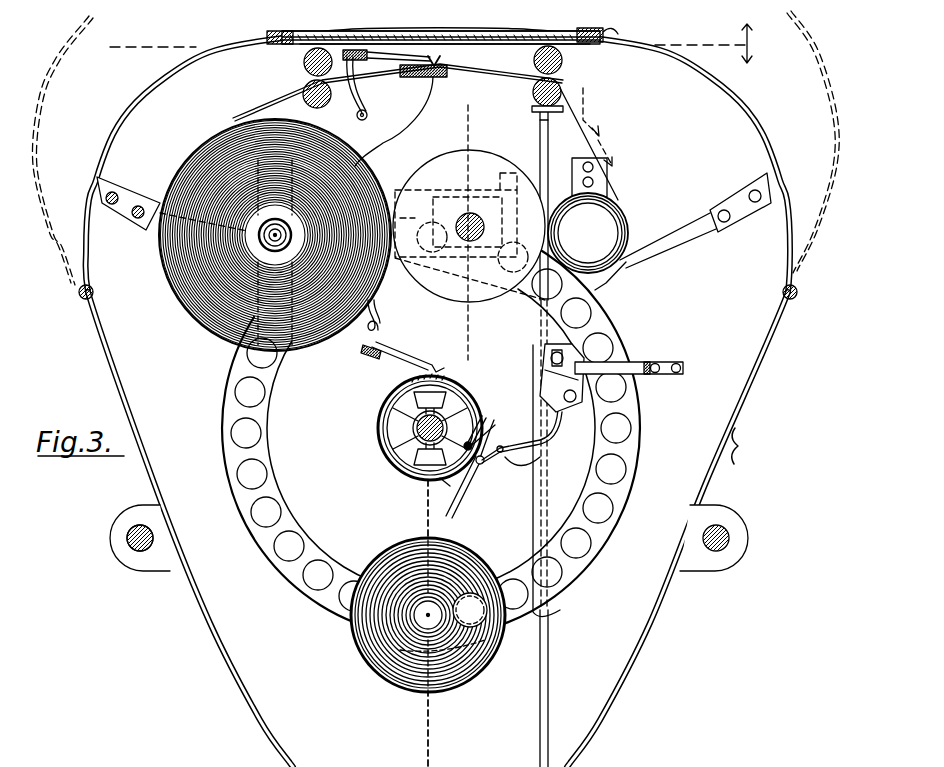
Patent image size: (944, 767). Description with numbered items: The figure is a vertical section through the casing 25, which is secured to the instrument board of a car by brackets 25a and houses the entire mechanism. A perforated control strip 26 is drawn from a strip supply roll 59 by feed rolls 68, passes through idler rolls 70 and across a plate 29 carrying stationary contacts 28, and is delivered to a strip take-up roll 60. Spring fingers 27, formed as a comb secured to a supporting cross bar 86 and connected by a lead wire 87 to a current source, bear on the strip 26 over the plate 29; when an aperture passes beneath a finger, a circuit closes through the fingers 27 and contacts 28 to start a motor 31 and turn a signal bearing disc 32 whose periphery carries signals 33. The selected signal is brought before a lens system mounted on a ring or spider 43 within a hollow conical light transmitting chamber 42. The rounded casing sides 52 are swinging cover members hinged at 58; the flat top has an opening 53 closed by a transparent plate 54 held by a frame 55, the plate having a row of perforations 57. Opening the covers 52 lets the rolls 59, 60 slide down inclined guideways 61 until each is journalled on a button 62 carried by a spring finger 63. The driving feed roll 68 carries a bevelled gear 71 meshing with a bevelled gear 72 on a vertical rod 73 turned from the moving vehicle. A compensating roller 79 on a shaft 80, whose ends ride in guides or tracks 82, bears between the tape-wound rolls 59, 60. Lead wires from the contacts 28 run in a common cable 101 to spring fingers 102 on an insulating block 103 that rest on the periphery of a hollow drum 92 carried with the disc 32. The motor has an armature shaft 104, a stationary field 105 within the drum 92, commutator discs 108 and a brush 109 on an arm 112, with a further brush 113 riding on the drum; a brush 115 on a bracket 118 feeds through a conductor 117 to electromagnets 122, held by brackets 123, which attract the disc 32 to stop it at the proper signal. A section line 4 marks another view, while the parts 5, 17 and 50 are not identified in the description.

The section line 4 is at (435, 148).
The rail 5 is at (474, 31).
The cord 17 is at (606, 288).
The casing 25 is at (749, 446).
The brackets 25a is at (120, 548).
The perforated control strip 26 is at (500, 76).
The spring fingers 27 is at (434, 52).
The stationary contacts 28 is at (450, 67).
The plate 29 is at (448, 78).
The motor 31 is at (440, 378).
The signal bearing disc 32 is at (431, 444).
The signals 33 is at (630, 428).
The hollow conical light transmitting chamber 42 is at (478, 562).
The ring or spider 43 is at (432, 638).
The frame side 50 is at (216, 645).
The rounded casing top sides 52 is at (124, 110).
The opening 53 is at (624, 22).
The transparent plate 54 is at (534, 26).
The frame 55 is at (435, 24).
The perforations 57 is at (420, 32).
The hinge 58 is at (84, 300).
The strip supply roll 59 is at (272, 246).
The strip take-up roll 60 is at (618, 232).
The inclined guideways 61 is at (130, 192).
The button 62 is at (274, 232).
The spring finger 63 is at (608, 164).
The feed rolls 68 is at (535, 100).
The idler rolls 70 is at (322, 48).
The bevelled gear 71 is at (536, 68).
The bevelled gear 72 is at (556, 114).
The vertical rod 73 is at (548, 675).
The roller 79 is at (486, 153).
The shaft 80 is at (470, 212).
The guides or tracks 82 is at (400, 190).
The supporting cross bar 86 is at (360, 50).
The lead wire 87 is at (373, 92).
The hollow drum 92 is at (478, 410).
The common cable 101 is at (378, 308).
The spring fingers 102 is at (412, 357).
The block of insulating material 103 is at (368, 354).
The armature shaft 104 is at (404, 462).
The stationary field 105 is at (392, 400).
The commutator discs 108 is at (412, 428).
The brush 109 is at (428, 480).
The arm 112 is at (494, 404).
The brush 113 is at (494, 422).
The brush 115 is at (472, 472).
The conductor 117 is at (512, 464).
The bracket 118 is at (516, 440).
The electromagnets 122 is at (544, 352).
The brackets 123 is at (626, 360).